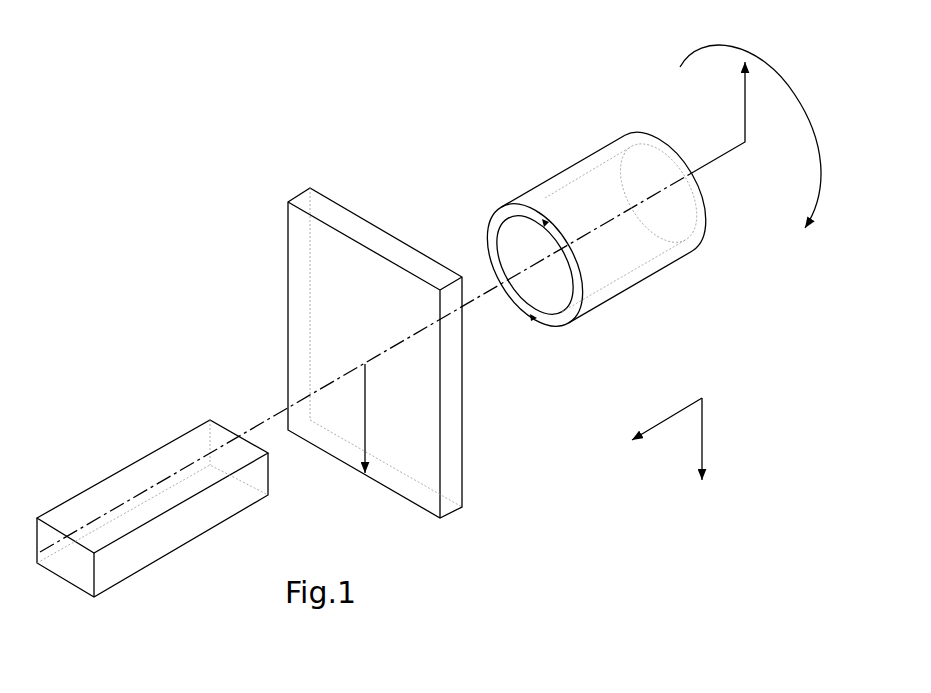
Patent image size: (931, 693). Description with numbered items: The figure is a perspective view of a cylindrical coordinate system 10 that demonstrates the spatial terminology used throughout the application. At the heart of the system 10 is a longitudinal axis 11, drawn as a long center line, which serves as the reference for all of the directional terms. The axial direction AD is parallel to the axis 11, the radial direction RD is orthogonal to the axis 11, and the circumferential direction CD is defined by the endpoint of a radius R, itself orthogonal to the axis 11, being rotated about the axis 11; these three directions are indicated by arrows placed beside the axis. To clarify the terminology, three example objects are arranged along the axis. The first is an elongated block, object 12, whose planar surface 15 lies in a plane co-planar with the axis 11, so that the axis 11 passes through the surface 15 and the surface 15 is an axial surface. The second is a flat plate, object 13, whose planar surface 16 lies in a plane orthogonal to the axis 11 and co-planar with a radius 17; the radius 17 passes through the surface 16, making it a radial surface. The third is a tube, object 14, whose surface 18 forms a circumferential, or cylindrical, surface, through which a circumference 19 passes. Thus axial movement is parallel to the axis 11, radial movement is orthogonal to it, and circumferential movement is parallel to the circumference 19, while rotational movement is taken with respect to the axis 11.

The cylindrical coordinate system 10 is at (243, 237).
The longitudinal axis 11 is at (683, 174).
The object 12 is at (122, 583).
The object 13 is at (470, 508).
The object 14 is at (617, 297).
The axial surface 15 is at (115, 490).
The radial surface 16 is at (302, 313).
The radius 17 is at (365, 412).
The circumferential surface 18 is at (562, 172).
The circumference 19 is at (488, 233).
The radius R is at (745, 97).
The circumferential direction CD is at (780, 87).
The axial direction AD is at (667, 417).
The radial direction RD is at (702, 433).